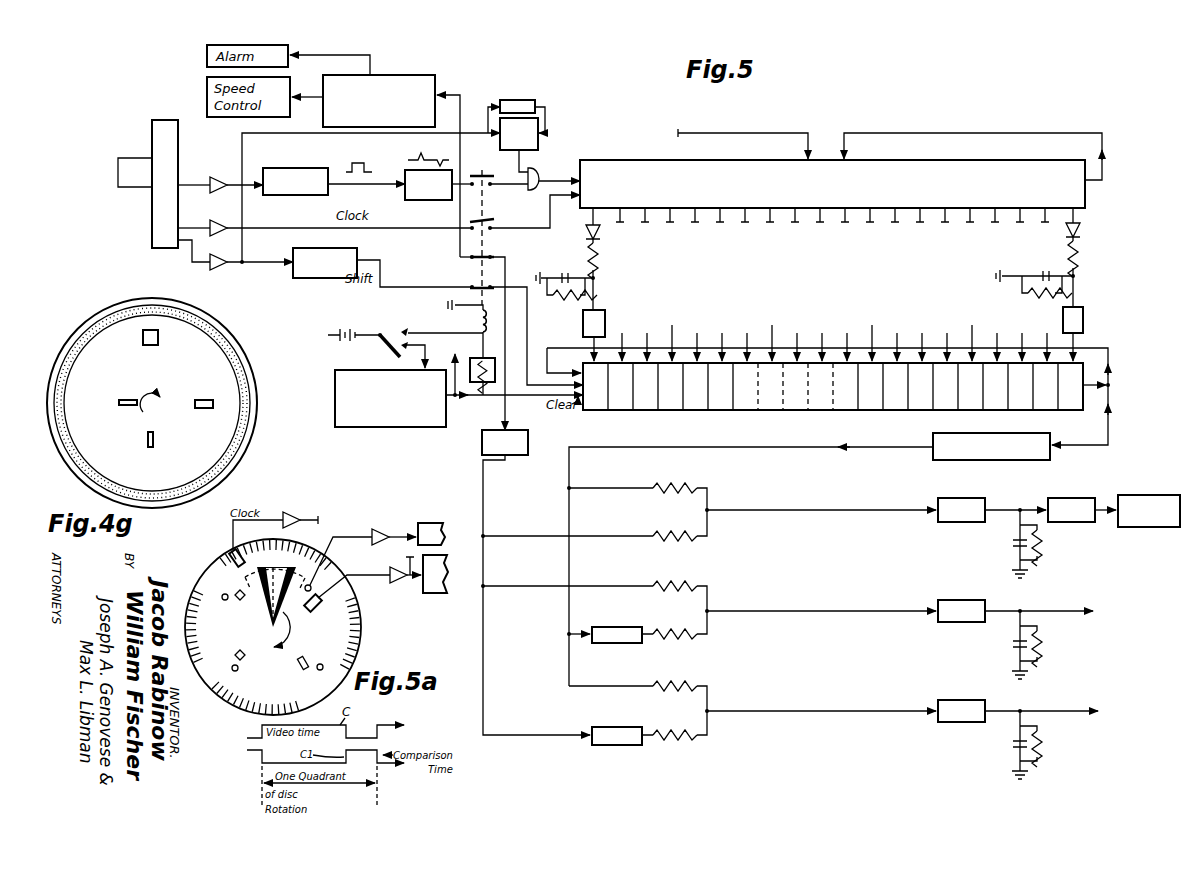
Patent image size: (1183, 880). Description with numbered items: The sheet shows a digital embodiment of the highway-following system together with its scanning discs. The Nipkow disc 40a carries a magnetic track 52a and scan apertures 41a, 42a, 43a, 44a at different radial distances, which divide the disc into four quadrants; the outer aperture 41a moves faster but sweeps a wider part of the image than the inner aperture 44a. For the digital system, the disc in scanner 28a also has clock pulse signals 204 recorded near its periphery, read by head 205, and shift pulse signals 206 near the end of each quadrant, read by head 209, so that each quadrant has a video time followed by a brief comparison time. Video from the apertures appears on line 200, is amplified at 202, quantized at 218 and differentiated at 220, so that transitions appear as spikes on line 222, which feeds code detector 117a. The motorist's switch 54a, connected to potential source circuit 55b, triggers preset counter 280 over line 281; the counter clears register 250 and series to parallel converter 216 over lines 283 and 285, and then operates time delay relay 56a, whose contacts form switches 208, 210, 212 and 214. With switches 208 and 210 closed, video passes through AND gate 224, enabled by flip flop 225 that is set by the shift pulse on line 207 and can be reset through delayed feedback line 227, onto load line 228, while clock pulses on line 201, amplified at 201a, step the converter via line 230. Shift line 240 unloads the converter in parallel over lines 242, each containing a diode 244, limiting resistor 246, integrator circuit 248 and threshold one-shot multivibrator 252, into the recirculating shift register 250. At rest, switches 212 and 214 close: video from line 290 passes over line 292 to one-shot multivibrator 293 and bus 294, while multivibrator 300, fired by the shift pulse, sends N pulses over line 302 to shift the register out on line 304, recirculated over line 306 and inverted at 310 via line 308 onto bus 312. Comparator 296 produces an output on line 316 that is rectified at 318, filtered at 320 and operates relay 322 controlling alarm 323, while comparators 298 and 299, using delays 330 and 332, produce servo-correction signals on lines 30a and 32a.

In FIG. 5, the code detector 117a is at (404, 84).
In FIG. 5, the scanner 28a is at (149, 198).
In FIG. 5, the video line 200 is at (189, 182).
In FIG. 5A, the video line 200 is at (336, 535).
In FIG. 5, the clock pulse line 201 is at (190, 228).
In FIG. 5A, the clock pulse line 201 is at (272, 511).
In FIG. 5, the clock pulse amplifier 201a is at (218, 222).
In FIG. 5A, the clock pulse amplifier 201a is at (292, 512).
In FIG. 5, the video amplifier 202 is at (215, 178).
In FIG. 5A, the video amplifier 202 is at (380, 528).
In FIG. 5, the shift pulse line 207 is at (196, 265).
In FIG. 5A, the shift pulse line 207 is at (381, 579).
In FIG. 5, the quantizer 218 is at (283, 196).
In FIG. 5A, the quantizer 218 is at (428, 523).
In FIG. 5, the differentiator 220 is at (401, 187).
In FIG. 5, the differentiated video line 222 is at (452, 197).
In FIG. 5, the relay switch 208 is at (480, 174).
In FIG. 5, the relay switch 210 is at (486, 221).
In FIG. 5, the relay switch 212 is at (488, 256).
In FIG. 5, the relay switch 214 is at (478, 288).
In FIG. 5, the comparison video line 290 is at (460, 236).
In FIG. 5, the multivibrator output line 302 is at (367, 260).
In FIG. 5, the converter clock line 230 is at (522, 228).
In FIG. 5, the delayed feedback line 227 is at (514, 99).
In FIG. 5, the flip flop 225 is at (538, 137).
In FIG. 5, the AND gate 224 is at (535, 170).
In FIG. 5, the converter load line 228 is at (556, 180).
In FIG. 5, the series to parallel converter 216 is at (944, 170).
In FIG. 5, the converter clear line 285 is at (771, 132).
In FIG. 5, the shift line 240 is at (939, 132).
In FIG. 5, the parallel lines 242 is at (1082, 213).
In FIG. 5, the diode 244 is at (601, 233).
In FIG. 5, the limiting resistor 246 is at (598, 258).
In FIG. 5, the integrator circuit 248 is at (566, 273).
In FIG. 5, the one-shot multivibrator 252 is at (605, 323).
In FIG. 5, the recirculating digital shift register 250 is at (675, 406).
In FIG. 5, the recirculation line 306 is at (1108, 353).
In FIG. 5, the register output line 304 is at (1092, 390).
In FIG. 5, the inverter input line 308 is at (1108, 435).
In FIG. 5, the inverter 310 is at (975, 460).
In FIG. 5, the potential source circuit 55b is at (352, 320).
In FIG. 5, the counter trigger line 281 is at (395, 356).
In FIG. 5, the switch 54a is at (388, 344).
In FIG. 5, the time delay relay 56a is at (478, 327).
In FIG. 5, the preset counter 280 is at (364, 428).
In FIG. 5, the register clear line 283 is at (459, 399).
In FIG. 5, the video comparison line 292 is at (503, 416).
In FIG. 5, the one-shot multivibrator 293 is at (529, 446).
In FIG. 5, the video bus 294 is at (484, 522).
In FIG. 5, the memory signal bus 312 is at (569, 518).
In FIG. 5, the multivibrator 300 is at (337, 279).
In FIG. 5A, the multivibrator 300 is at (438, 594).
In FIG. 5, the comparator 296 is at (678, 487).
In FIG. 5, the comparator output line 316 is at (809, 510).
In FIG. 5, the comparator 298 is at (678, 585).
In FIG. 5, the one-stage delay 330 is at (609, 627).
In FIG. 5, the comparator 299 is at (684, 685).
In FIG. 5, the delay 332 is at (616, 727).
In FIG. 5, the rectifier 318 is at (966, 523).
In FIG. 5, the filter 320 is at (1040, 544).
In FIG. 5, the relay 322 is at (1071, 498).
In FIG. 5, the alarm 323 is at (1149, 528).
In FIG. 5, the servo-correction line 30a is at (1053, 611).
In FIG. 5, the servo-correction line 32a is at (1060, 711).
In FIG. 4G, the Nipkow scanning disc 40a is at (226, 382).
In FIG. 5A, the Nipkow scanning disc 40a is at (340, 641).
In FIG. 4G, the magnetic track 52a is at (82, 341).
In FIG. 4G, the scan aperture 41a is at (150, 346).
In FIG. 5A, the scan aperture 41a is at (223, 600).
In FIG. 4G, the scan aperture 42a is at (204, 409).
In FIG. 5A, the scan aperture 42a is at (312, 590).
In FIG. 4G, the scan aperture 43a is at (151, 448).
In FIG. 5A, the scan aperture 43a is at (318, 670).
In FIG. 4G, the scan aperture 44a is at (126, 407).
In FIG. 5A, the scan aperture 44a is at (238, 670).
In FIG. 5A, the clock pulse signals 204 is at (206, 582).
In FIG. 5A, the clock read head 205 is at (232, 552).
In FIG. 5A, the shift pulse signals 206 is at (242, 601).
In FIG. 5A, the shift read head 209 is at (313, 607).